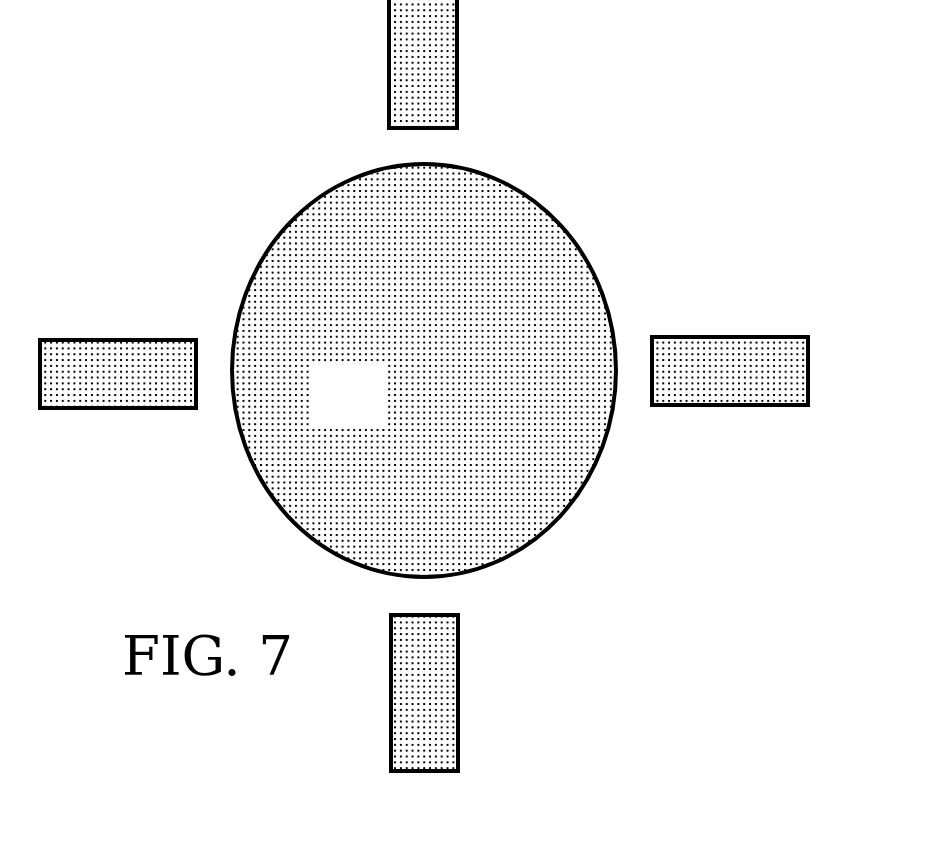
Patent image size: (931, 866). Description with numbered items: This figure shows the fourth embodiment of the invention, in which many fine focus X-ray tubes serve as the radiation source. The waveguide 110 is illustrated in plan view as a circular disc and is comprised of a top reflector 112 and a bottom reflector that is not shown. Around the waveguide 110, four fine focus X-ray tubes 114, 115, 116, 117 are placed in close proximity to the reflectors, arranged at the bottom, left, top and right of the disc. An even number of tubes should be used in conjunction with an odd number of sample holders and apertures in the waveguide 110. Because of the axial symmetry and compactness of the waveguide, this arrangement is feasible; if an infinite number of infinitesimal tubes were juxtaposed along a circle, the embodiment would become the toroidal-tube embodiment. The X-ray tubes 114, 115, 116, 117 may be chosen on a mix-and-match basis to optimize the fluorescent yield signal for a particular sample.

The waveguide 110 is at (305, 203).
The top reflector 112 is at (432, 367).
The fine focus X-ray tube 114 is at (460, 705).
The fine focus X-ray tube 115 is at (127, 410).
The fine focus X-ray tube 116 is at (459, 42).
The fine focus X-ray tube 117 is at (750, 335).